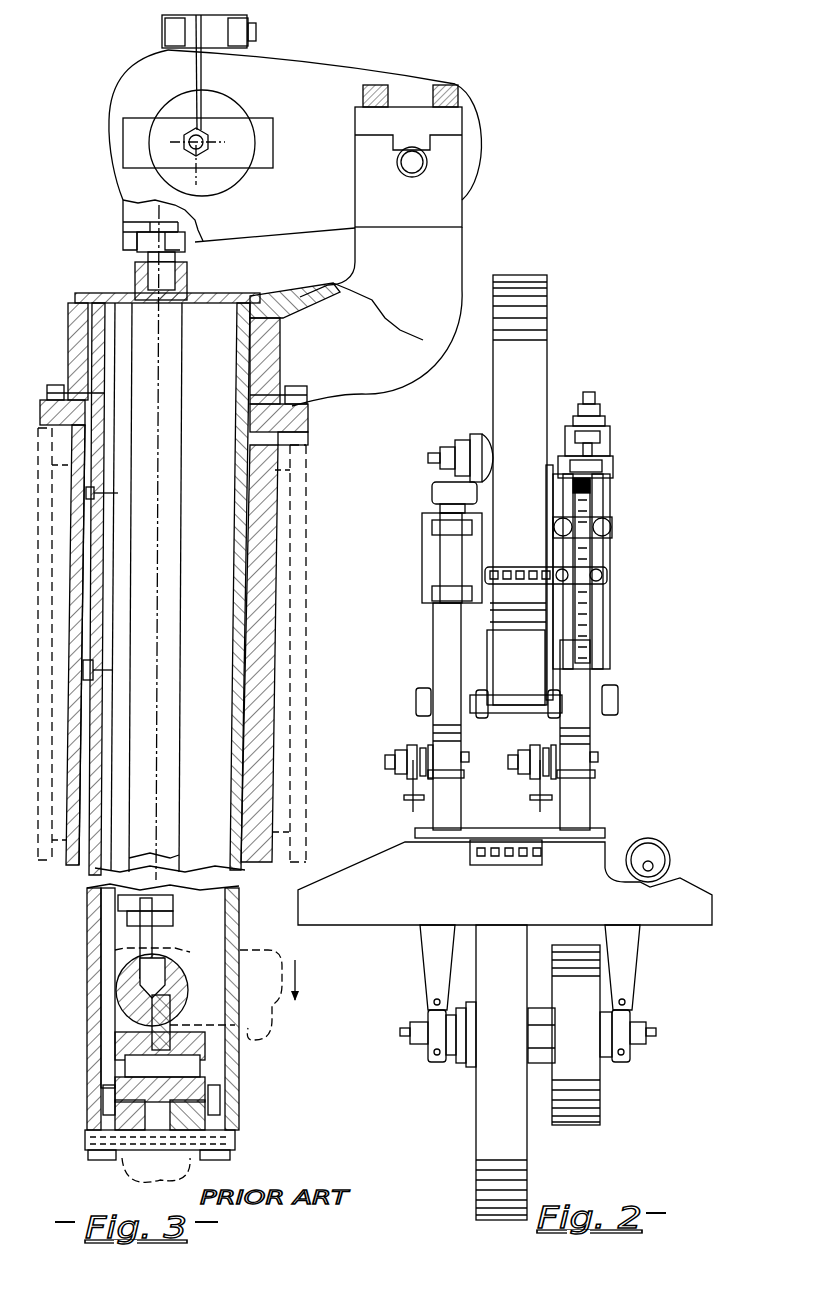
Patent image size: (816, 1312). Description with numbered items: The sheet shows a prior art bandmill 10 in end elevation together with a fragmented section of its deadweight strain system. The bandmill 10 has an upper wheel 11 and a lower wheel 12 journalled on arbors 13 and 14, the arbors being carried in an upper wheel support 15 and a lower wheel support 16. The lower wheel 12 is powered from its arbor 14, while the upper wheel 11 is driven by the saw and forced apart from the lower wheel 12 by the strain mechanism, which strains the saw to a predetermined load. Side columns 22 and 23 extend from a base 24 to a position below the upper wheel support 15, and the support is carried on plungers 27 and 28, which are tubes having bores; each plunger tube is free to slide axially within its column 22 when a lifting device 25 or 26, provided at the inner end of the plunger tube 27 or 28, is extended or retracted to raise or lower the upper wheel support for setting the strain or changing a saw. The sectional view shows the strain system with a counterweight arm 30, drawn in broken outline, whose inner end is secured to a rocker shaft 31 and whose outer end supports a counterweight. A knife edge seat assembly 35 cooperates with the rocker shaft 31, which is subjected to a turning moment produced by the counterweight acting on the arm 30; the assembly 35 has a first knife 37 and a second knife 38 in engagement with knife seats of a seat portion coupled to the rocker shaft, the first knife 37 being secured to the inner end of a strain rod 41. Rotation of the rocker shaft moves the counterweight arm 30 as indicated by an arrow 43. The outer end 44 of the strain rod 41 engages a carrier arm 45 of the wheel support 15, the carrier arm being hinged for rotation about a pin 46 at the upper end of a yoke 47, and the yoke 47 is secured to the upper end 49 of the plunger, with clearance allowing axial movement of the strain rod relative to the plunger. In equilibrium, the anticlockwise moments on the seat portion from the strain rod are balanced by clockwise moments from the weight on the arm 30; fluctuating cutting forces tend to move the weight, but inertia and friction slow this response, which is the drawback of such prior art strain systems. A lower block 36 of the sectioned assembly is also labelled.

In FIG. 2, the bandmill 10 is at (600, 404).
In FIG. 2, the upper wheel 11 is at (535, 356).
In FIG. 2, the lower wheel 12 is at (485, 1120).
In FIG. 3, the arbor 13 is at (212, 140).
In FIG. 2, the arbor 13 is at (426, 458).
In FIG. 2, the arbor 14 is at (640, 1048).
In FIG. 3, the upper wheel support 15 is at (408, 68).
In FIG. 2, the upper wheel support 15 is at (612, 437).
In FIG. 2, the lower wheel support 16 is at (432, 950).
In FIG. 3, the side column 22 is at (270, 440).
In FIG. 2, the side column 22 is at (612, 578).
In FIG. 2, the side column 23 is at (420, 572).
In FIG. 2, the base 24 is at (382, 868).
In FIG. 3, the lifting device 25 is at (195, 1172).
In FIG. 2, the lifting device 25 is at (585, 770).
In FIG. 2, the lifting device 26 is at (440, 750).
In FIG. 3, the plunger 27 is at (240, 918).
In FIG. 2, the plunger 27 is at (585, 692).
In FIG. 2, the plunger 28 is at (433, 652).
In FIG. 3, the counterweight arm 30 is at (252, 1040).
In FIG. 3, the rocker shaft 31 is at (100, 955).
In FIG. 2, the rocker shaft 31 is at (470, 703).
In FIG. 3, the knife edge seat assembly 35 is at (117, 995).
In FIG. 3, the bottom block 36 is at (238, 1122).
In FIG. 3, the first knife 37 is at (172, 1013).
In FIG. 3, the second knife 38 is at (158, 942).
In FIG. 3, the strain rod 41 is at (165, 452).
In FIG. 3, the arrow 43 is at (296, 990).
In FIG. 3, the outer end of strain rod 44 is at (190, 281).
In FIG. 3, the carrier arm 45 is at (294, 197).
In FIG. 3, the pin 46 is at (412, 176).
In FIG. 3, the yoke 47 is at (399, 267).
In FIG. 3, the upper end of plunger 49 is at (247, 318).